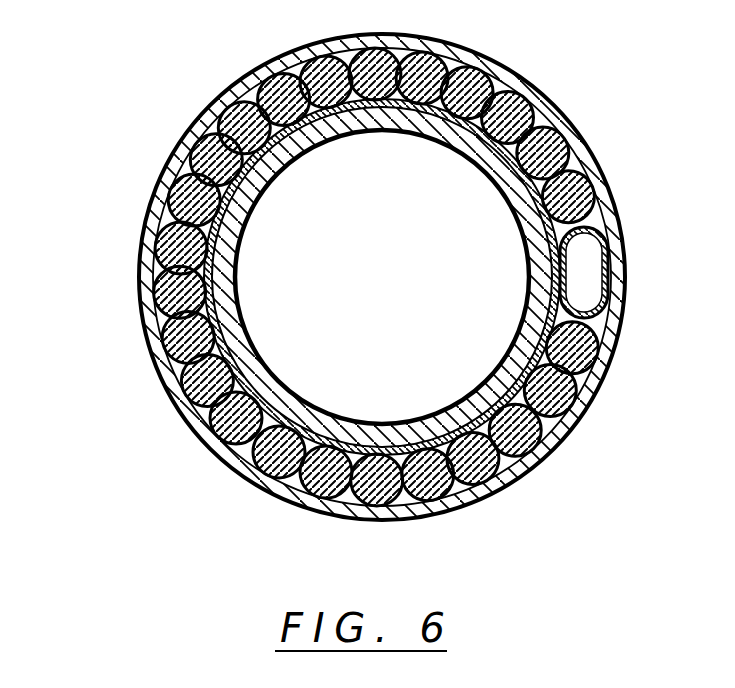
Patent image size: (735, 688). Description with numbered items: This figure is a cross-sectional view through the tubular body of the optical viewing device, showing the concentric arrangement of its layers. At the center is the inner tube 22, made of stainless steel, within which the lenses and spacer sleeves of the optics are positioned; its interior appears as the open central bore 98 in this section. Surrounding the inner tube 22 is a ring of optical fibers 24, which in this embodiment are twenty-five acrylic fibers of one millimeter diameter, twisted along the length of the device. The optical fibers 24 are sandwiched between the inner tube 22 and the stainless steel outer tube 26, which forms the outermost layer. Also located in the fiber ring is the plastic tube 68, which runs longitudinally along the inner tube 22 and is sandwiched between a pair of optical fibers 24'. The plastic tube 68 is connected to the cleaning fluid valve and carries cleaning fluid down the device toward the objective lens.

The inner tube 22 is at (513, 78).
The outer tube 26 is at (557, 112).
The central passage 98 is at (478, 168).
The optical fibers 24 is at (368, 277).
The pair of optical fibers 24' is at (611, 272).
The plastic tube 68 is at (606, 318).